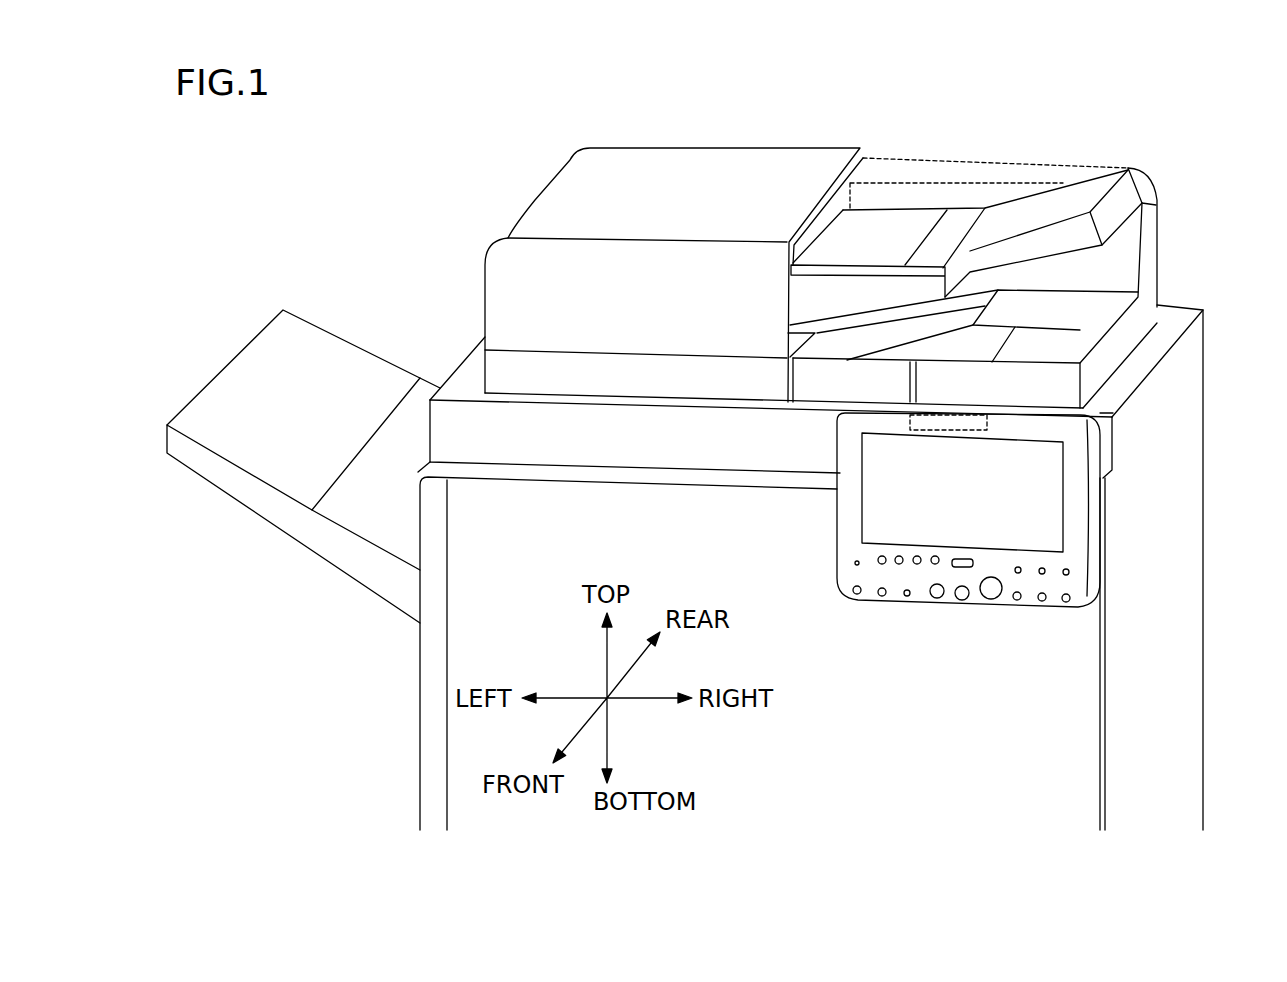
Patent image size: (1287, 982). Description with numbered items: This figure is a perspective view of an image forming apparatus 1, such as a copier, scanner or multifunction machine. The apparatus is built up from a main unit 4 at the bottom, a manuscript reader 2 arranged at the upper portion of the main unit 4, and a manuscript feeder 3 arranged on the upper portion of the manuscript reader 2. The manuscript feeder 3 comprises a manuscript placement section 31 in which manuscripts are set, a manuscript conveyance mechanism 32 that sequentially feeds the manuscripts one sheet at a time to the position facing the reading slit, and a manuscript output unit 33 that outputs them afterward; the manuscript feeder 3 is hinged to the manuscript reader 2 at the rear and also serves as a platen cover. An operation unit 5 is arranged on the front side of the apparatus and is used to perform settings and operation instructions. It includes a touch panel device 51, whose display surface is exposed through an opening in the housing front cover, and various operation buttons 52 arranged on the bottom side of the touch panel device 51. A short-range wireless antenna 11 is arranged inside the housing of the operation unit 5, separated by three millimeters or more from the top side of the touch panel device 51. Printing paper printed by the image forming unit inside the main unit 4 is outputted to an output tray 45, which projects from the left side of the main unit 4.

The image forming apparatus 1 is at (470, 155).
The manuscript reader 2 is at (468, 358).
The manuscript feeder 3 is at (750, 118).
The main unit 4 is at (393, 672).
The operation unit 5 is at (820, 562).
The short-range wireless antenna 11 is at (920, 428).
The manuscript placement section 31 is at (923, 220).
The manuscript conveyance mechanism 32 is at (606, 155).
The manuscript output unit 33 is at (1018, 307).
The output tray 45 is at (293, 360).
The touch panel device 51 is at (877, 475).
The operation buttons 52 is at (983, 596).